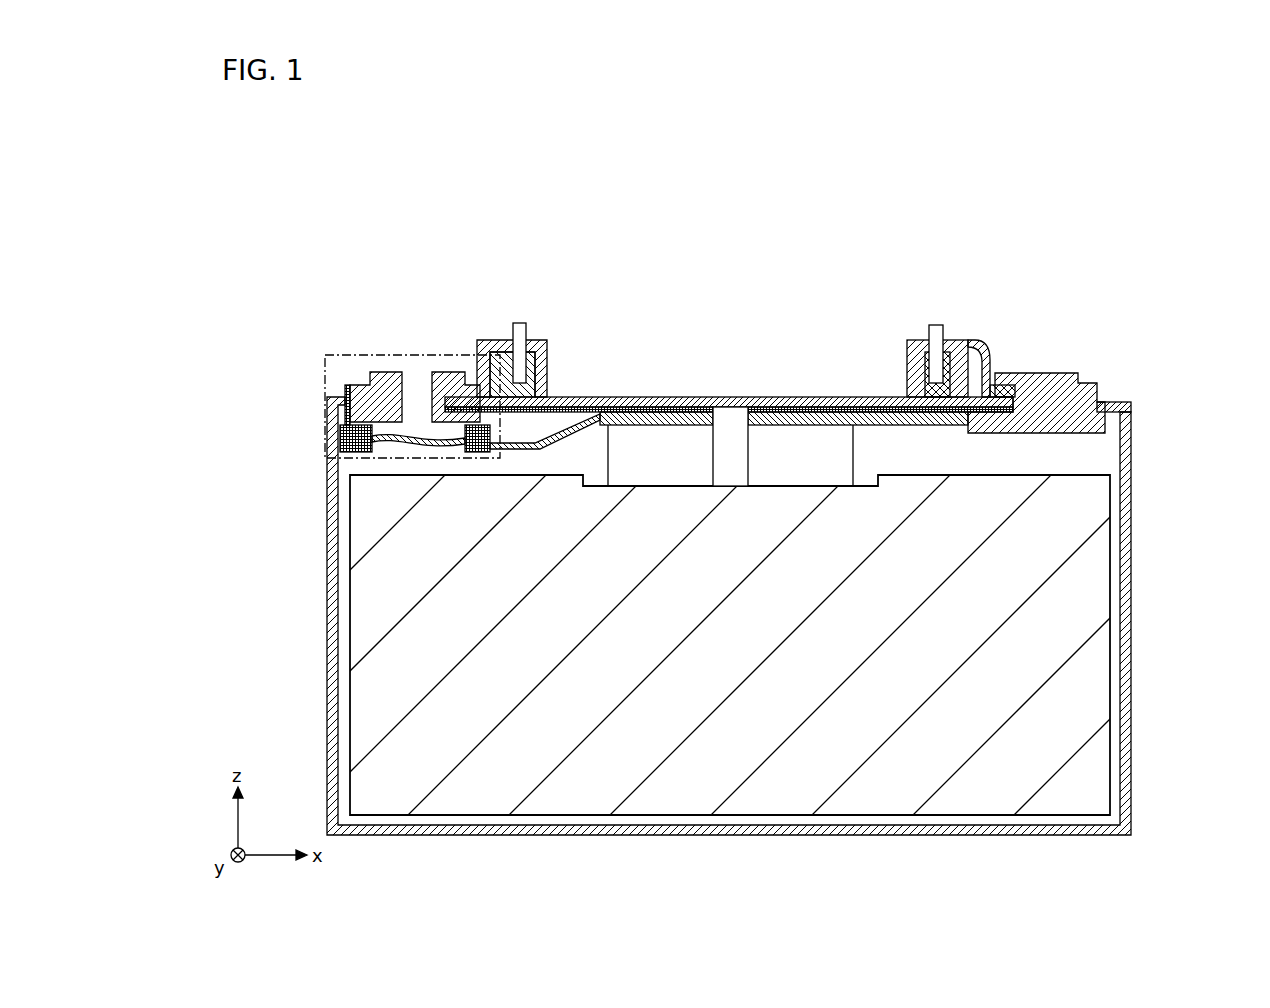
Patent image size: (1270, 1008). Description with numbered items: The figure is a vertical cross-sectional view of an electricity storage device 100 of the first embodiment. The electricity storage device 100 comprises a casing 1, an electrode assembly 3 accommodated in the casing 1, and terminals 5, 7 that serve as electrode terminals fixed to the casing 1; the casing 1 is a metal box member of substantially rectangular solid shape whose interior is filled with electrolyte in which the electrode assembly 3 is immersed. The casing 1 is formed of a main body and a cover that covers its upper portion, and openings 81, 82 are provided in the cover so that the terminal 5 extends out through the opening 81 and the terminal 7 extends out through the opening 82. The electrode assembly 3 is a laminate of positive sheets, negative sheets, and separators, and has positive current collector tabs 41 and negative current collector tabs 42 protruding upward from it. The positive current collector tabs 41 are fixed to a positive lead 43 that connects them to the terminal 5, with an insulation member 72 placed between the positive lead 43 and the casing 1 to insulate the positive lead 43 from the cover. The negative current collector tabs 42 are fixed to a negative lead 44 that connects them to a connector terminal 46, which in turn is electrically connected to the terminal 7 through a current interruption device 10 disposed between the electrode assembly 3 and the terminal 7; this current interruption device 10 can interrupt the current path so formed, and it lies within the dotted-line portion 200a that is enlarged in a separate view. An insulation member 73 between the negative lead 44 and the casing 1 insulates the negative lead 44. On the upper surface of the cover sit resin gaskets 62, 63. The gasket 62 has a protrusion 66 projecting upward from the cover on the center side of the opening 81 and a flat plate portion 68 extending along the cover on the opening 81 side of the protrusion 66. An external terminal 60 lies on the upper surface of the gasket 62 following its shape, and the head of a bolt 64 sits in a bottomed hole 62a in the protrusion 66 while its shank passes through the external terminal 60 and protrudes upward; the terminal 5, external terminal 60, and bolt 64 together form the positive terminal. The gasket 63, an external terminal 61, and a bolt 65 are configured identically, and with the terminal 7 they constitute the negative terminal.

The electricity storage device 100 is at (960, 255).
The casing 1 is at (1131, 622).
The electrode assembly 3 is at (1060, 712).
The terminal 5 is at (993, 350).
The terminal 7 is at (432, 376).
The current interruption device 10 is at (374, 462).
The positive current collector tabs 41 is at (790, 445).
The negative current collector tabs 42 is at (670, 445).
The positive lead 43 is at (826, 414).
The negative lead 44 is at (588, 418).
The connector terminal 46 is at (513, 443).
The external terminal 60 is at (912, 345).
The external terminal 61 is at (500, 348).
The gasket 62 is at (1000, 332).
The bottomed hole 62a is at (948, 358).
The gasket 63 is at (542, 352).
The bolt 64 is at (935, 352).
The bolt 65 is at (519, 323).
The protrusion 66 is at (982, 370).
The flat plate portion 68 is at (1008, 395).
The insulation member 72 is at (865, 397).
The insulation member 73 is at (625, 397).
The opening 81 is at (1047, 400).
The opening 82 is at (378, 385).
The dotted-line portion 200a is at (352, 357).